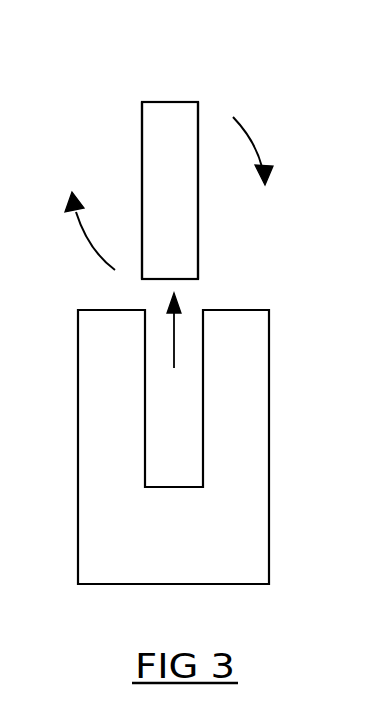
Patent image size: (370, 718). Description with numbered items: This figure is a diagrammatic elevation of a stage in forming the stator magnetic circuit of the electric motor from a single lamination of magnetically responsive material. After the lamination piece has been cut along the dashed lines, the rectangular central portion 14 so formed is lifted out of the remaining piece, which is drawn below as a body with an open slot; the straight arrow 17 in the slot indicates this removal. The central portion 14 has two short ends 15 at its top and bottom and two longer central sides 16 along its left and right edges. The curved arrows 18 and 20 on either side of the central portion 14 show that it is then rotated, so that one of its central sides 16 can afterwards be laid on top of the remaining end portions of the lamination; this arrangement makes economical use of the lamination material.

The central portion 14 is at (170, 190).
The ends 15 is at (163, 101).
The central sides 16 is at (142, 152).
The insertion direction arrow 17 is at (174, 348).
The arrow 18 is at (266, 151).
The arrow 20 is at (79, 231).